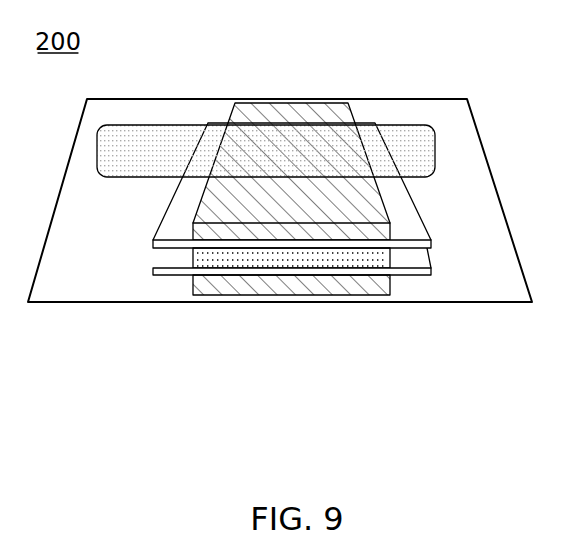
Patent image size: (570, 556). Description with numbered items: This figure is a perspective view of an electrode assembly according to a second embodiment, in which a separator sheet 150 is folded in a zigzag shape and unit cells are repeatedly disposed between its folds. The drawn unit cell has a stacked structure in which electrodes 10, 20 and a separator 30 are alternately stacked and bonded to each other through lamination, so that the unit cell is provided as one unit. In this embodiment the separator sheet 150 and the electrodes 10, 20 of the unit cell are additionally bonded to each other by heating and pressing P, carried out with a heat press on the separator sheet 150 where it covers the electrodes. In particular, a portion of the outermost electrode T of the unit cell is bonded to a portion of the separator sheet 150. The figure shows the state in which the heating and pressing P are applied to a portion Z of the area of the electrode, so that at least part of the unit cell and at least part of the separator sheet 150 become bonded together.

The separator sheet 150 is at (443, 110).
The outermost electrode T is at (360, 193).
The separator 30 is at (183, 202).
The electrode 10 is at (285, 262).
The electrode 20 is at (223, 285).
The portion of an area of the electrode Z is at (110, 151).
The heating and pressing P is at (271, 112).